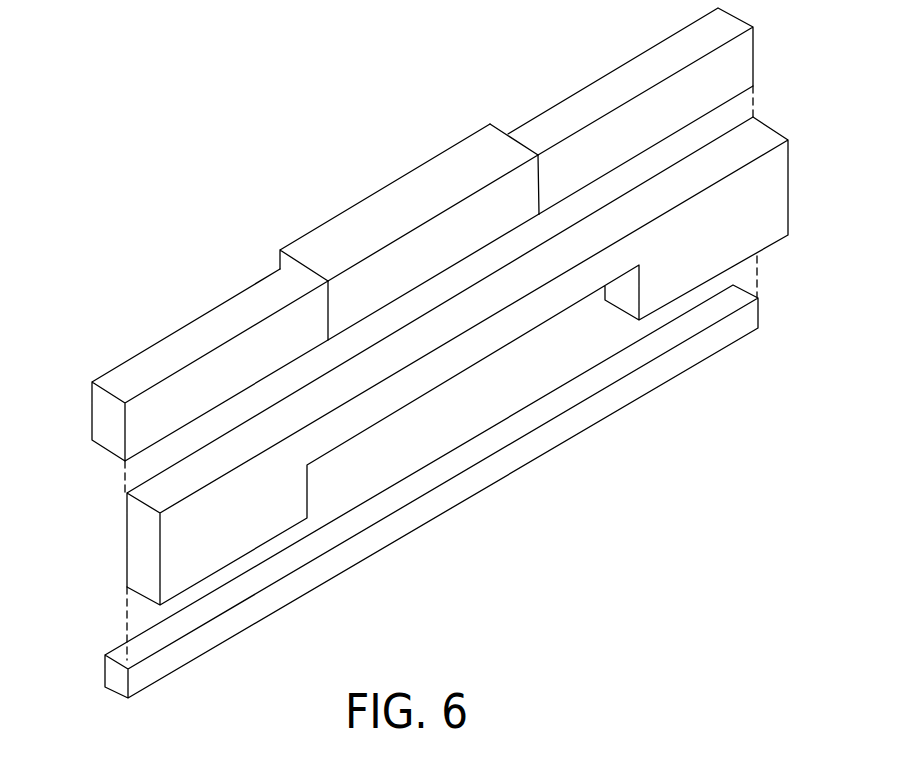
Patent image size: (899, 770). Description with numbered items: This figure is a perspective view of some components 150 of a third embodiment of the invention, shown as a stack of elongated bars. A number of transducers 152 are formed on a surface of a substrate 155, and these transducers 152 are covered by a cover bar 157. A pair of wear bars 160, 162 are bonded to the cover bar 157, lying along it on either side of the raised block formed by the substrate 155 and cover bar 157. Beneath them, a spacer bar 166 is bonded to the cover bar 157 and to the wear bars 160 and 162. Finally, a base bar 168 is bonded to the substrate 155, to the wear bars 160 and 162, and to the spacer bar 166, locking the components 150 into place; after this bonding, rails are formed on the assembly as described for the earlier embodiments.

The components 150 is at (693, 531).
The transducers 152 is at (375, 222).
The substrate 155 is at (328, 232).
The cover bar 157 is at (500, 165).
The wear bar 160 is at (199, 333).
The wear bar 162 is at (633, 58).
The spacer bar 166 is at (142, 536).
The base bar 168 is at (412, 523).